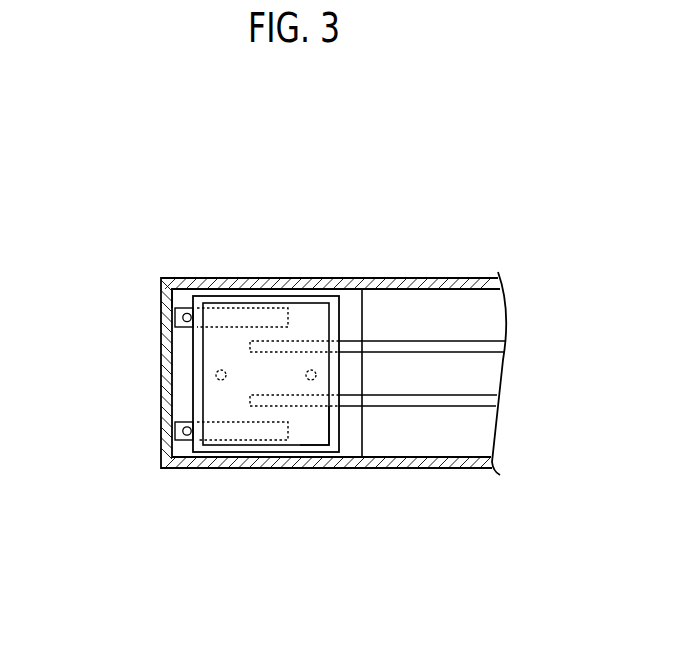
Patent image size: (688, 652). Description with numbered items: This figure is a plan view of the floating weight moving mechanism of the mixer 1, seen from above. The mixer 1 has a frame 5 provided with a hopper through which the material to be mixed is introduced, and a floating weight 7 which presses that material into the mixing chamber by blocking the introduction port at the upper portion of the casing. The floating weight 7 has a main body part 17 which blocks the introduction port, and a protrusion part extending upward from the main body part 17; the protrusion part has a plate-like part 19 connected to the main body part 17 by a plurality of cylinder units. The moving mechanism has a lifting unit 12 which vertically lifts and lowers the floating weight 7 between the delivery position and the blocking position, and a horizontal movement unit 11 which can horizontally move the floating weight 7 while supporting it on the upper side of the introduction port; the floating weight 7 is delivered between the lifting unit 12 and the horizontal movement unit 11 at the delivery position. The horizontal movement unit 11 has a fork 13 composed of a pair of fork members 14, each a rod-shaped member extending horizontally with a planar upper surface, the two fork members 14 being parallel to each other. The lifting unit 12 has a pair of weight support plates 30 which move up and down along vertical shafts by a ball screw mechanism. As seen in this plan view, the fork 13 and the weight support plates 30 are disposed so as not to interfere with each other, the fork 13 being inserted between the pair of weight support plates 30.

The mixer 1 is at (88, 199).
The frame 5 is at (401, 283).
The floating weight 7 is at (243, 290).
The horizontal movement unit 11 is at (421, 334).
The lifting unit 12 is at (180, 296).
The fork 13 is at (481, 320).
The fork member 14 is at (485, 348).
The main body part 17 is at (335, 432).
The plate-like part 19 is at (300, 316).
The weight support plate 30 is at (177, 322).